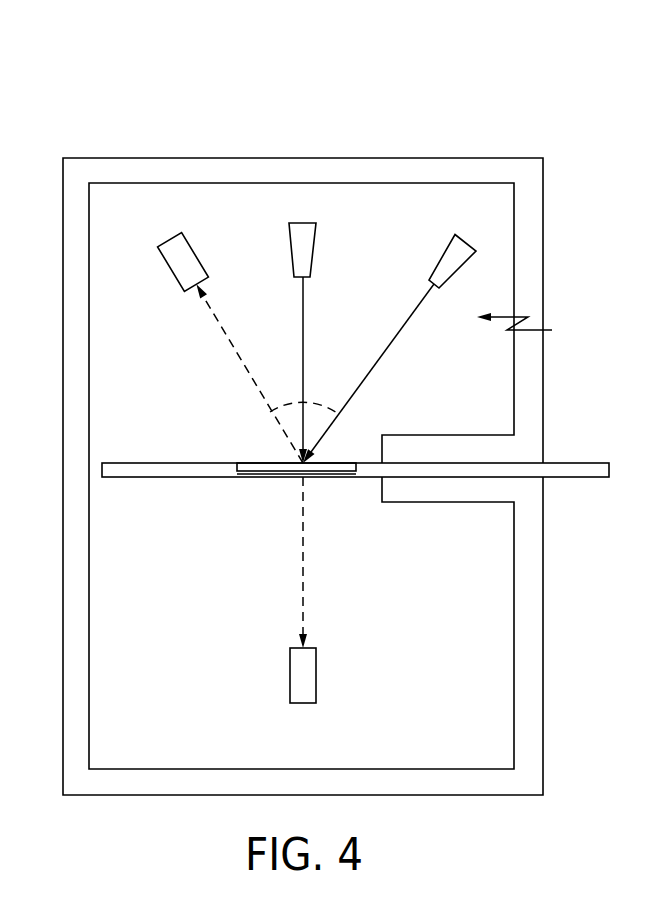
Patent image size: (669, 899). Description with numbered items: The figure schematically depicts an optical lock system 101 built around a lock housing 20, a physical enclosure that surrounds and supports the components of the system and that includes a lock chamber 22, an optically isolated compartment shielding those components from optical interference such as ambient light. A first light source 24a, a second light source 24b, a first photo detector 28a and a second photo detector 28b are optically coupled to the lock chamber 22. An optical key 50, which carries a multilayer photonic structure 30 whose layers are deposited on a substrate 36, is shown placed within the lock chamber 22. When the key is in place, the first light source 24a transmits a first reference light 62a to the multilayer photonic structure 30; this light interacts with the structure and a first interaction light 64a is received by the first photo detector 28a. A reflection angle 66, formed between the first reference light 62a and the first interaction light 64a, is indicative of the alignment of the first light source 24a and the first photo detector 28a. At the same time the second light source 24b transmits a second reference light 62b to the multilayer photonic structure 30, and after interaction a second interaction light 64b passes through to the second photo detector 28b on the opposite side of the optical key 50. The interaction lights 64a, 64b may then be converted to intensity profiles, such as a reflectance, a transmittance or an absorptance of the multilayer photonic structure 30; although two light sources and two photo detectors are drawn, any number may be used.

The optical lock system 101 is at (132, 120).
The lock housing 20 is at (497, 158).
The lock chamber 22 is at (533, 329).
The first light source 24a is at (446, 252).
The second light source 24b is at (312, 252).
The first photo detector 28a is at (195, 260).
The second photo detector 28b is at (316, 680).
The multilayer photonic structure 30 is at (340, 463).
The substrate 36 is at (323, 477).
The optical key 50 is at (170, 462).
The first reference light 62a is at (393, 340).
The second reference light 62b is at (303, 310).
The first interaction light 64a is at (222, 330).
The second interaction light 64b is at (300, 580).
The reflection angle 66 is at (315, 405).